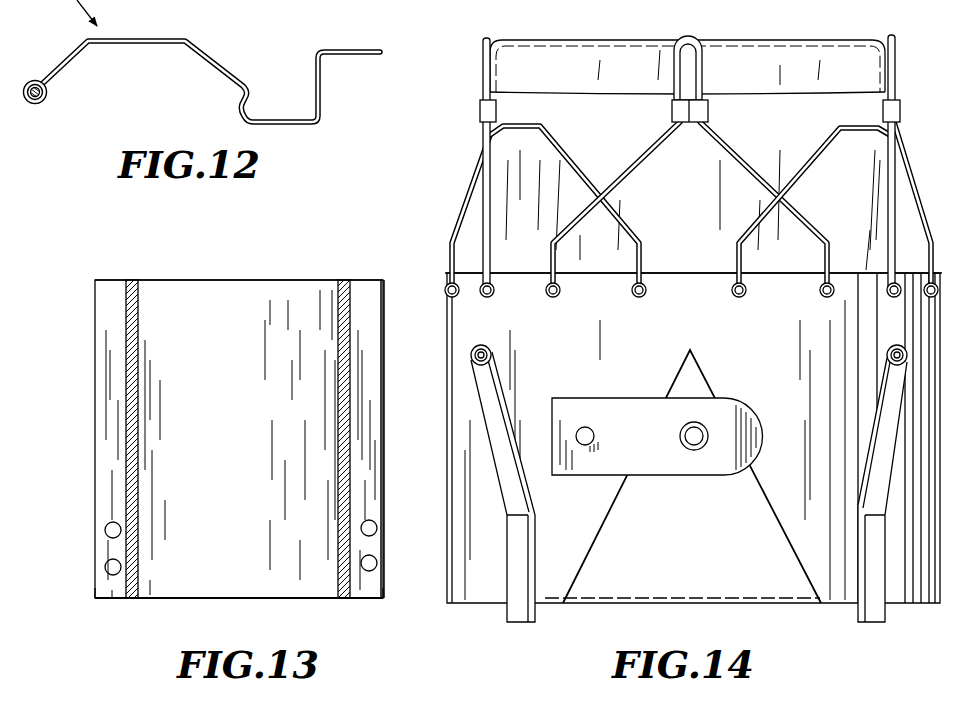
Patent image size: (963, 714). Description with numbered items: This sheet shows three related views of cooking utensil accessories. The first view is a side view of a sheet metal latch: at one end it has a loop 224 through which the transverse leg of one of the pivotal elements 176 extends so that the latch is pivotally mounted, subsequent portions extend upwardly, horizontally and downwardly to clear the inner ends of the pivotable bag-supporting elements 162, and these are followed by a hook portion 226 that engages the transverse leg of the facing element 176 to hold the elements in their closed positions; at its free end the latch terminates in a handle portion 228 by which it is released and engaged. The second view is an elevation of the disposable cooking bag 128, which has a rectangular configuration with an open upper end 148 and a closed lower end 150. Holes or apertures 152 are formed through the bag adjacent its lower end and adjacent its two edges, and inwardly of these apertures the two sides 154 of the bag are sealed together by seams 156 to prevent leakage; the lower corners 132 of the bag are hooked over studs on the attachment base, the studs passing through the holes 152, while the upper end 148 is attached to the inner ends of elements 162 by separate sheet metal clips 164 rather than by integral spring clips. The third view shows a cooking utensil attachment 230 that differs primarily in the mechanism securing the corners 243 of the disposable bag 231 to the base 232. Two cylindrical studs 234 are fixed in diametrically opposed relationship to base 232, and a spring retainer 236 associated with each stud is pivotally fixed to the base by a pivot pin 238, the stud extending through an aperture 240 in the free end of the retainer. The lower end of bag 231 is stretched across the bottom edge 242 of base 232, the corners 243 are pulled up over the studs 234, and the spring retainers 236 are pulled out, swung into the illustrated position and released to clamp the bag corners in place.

In FIG. 12, the loop 224 is at (40, 104).
In FIG. 12, the hook portion 226 is at (240, 112).
In FIG. 12, the handle portion 228 is at (367, 49).
In FIG. 13, the disposable cooking bag 128 is at (104, 271).
In FIG. 13, the open upper end 148 is at (206, 280).
In FIG. 13, the seams 156 is at (340, 338).
In FIG. 13, the sides 154 is at (243, 408).
In FIG. 13, the holes or apertures 152 is at (104, 565).
In FIG. 13, the lower corners 132 is at (96, 598).
In FIG. 13, the closed lower end 150 is at (205, 599).
In FIG. 14, the cooking utensil attachment 230 is at (465, 75).
In FIG. 14, the disposable bag 231 is at (637, 44).
In FIG. 14, the clips 164 is at (694, 84).
In FIG. 14, the bag-supporting elements 162 is at (645, 147).
In FIG. 14, the pivotal elements 176 is at (470, 182).
In FIG. 14, the base 232 is at (448, 355).
In FIG. 14, the corners 243 is at (680, 352).
In FIG. 14, the cylindrical studs 234 is at (700, 430).
In FIG. 14, the apertures 240 is at (712, 437).
In FIG. 14, the pivot pins 238 is at (594, 438).
In FIG. 14, the spring retainer 236 is at (660, 478).
In FIG. 14, the bottom edge 242 is at (832, 606).